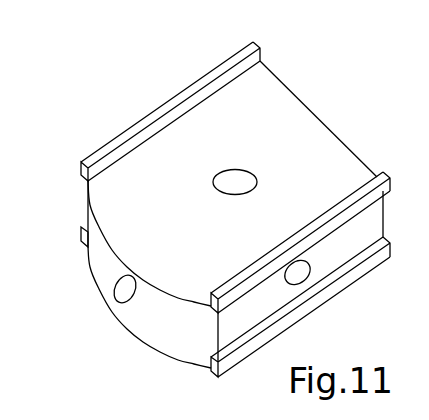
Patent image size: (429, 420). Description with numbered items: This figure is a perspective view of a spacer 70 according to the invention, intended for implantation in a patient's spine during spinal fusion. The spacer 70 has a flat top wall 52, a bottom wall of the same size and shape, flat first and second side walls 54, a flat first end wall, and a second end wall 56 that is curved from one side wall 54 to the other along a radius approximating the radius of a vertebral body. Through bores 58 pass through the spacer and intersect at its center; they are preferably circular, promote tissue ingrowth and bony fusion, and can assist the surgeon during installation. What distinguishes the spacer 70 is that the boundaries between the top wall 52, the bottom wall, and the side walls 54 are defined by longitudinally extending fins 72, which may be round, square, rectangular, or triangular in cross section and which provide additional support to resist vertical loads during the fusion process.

The spacer 70 is at (325, 93).
The top wall 52 is at (333, 147).
The side wall 54 is at (272, 302).
The second end wall 56 is at (167, 323).
The through bores 58 is at (306, 272).
The fins 72 is at (205, 75).